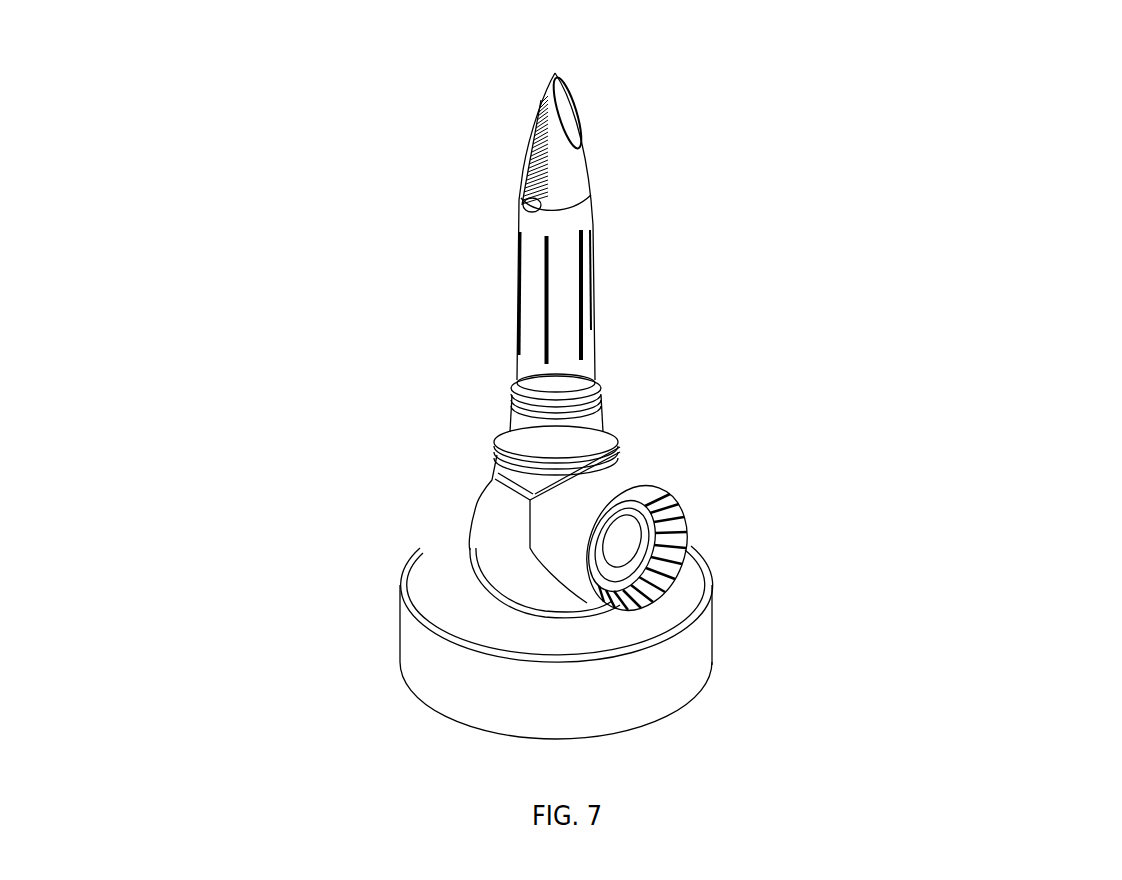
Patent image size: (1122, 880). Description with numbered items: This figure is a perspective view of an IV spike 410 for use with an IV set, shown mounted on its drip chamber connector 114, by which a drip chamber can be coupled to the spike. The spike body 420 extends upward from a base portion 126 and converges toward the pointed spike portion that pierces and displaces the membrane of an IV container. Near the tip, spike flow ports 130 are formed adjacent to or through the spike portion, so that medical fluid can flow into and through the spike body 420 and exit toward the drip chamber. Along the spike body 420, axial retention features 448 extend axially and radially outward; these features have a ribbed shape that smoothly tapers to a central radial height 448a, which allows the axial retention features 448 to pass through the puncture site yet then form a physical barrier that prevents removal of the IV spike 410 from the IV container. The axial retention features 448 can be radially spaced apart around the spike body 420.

The IV spike 410 is at (943, 108).
The spike flow ports 130 is at (560, 78).
The spike body 420 is at (590, 184).
The axial retention features 448 is at (598, 267).
The central radial height 448a is at (515, 293).
The base portion 126 is at (607, 422).
The drip chamber connector 114 is at (713, 645).